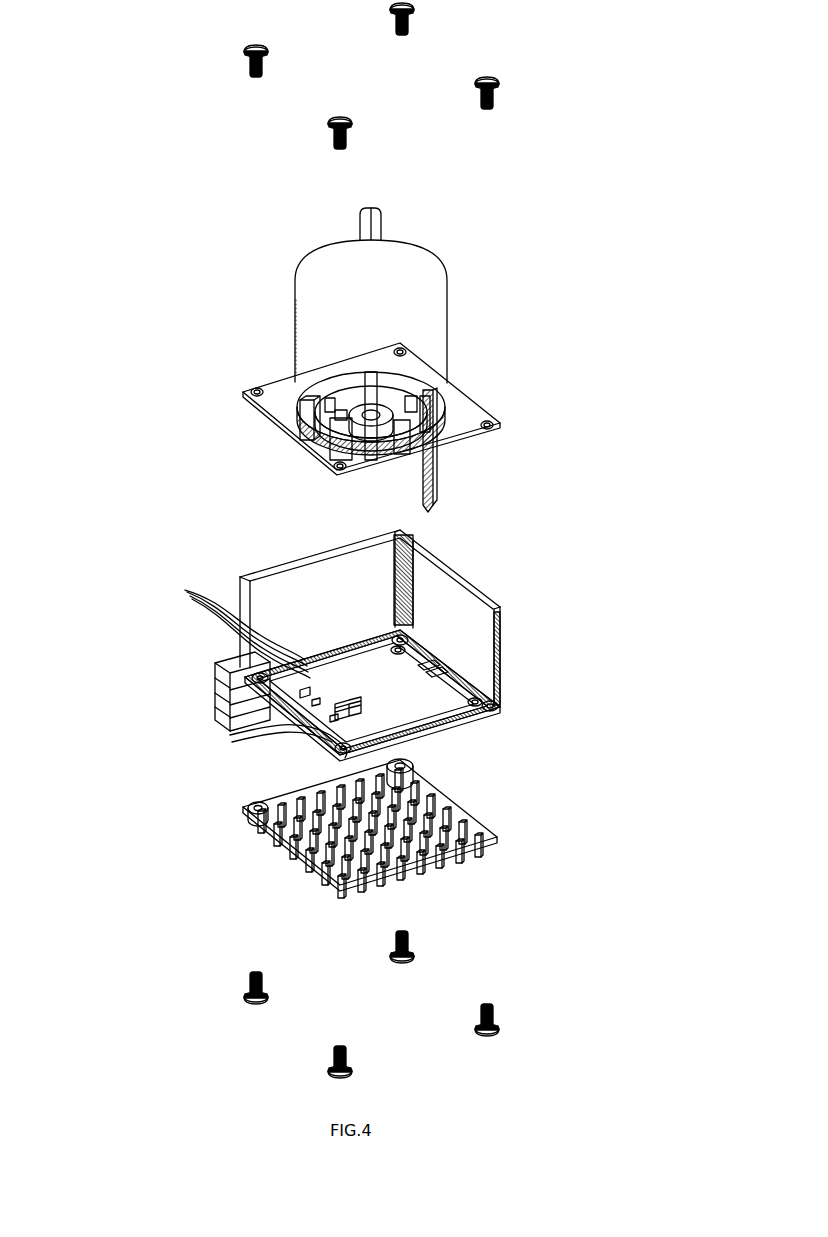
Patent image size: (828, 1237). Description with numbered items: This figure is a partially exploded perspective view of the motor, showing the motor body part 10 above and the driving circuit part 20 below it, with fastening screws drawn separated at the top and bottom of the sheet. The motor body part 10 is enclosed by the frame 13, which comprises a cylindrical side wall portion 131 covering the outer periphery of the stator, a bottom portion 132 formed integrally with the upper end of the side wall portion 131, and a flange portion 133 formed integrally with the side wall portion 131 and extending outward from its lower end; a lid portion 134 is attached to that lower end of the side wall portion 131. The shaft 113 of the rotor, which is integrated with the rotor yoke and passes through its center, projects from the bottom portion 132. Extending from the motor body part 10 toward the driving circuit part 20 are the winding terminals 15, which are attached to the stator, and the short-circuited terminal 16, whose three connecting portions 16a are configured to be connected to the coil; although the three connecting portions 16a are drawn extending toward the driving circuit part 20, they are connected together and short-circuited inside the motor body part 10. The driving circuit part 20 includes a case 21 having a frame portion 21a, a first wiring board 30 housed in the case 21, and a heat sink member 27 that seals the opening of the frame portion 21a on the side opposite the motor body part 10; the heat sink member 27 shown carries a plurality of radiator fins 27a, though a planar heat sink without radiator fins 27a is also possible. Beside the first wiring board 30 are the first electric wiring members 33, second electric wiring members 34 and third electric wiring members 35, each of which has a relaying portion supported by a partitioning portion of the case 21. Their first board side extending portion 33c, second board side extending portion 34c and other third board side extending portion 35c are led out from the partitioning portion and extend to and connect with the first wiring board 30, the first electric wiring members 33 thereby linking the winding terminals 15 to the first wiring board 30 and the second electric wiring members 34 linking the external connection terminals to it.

The motor body part 10 is at (458, 277).
The shaft 113 is at (390, 212).
The frame 13 is at (110, 203).
The side wall portion 131 is at (318, 287).
The bottom portion 132 is at (318, 250).
The flange portion 133 is at (262, 384).
The lid portion 134 is at (255, 408).
The short-circuited terminal 16 is at (301, 434).
The connecting portions 16a is at (338, 455).
The winding terminals 15 is at (436, 490).
The driving circuit part 20 is at (506, 770).
The case 21 is at (416, 618).
The frame portion 21a is at (480, 598).
The first wiring board 30 is at (423, 710).
The first electric wiring members 33 is at (268, 779).
The first board side extending portion 33c is at (362, 762).
The second electric wiring members 34 is at (226, 711).
The second board side extending portion 34c is at (300, 743).
The third electric wiring members 35 is at (237, 609).
The other third board side extending portion 35c is at (238, 623).
The heat sink member 27 is at (490, 822).
The radiator fins 27a is at (452, 880).